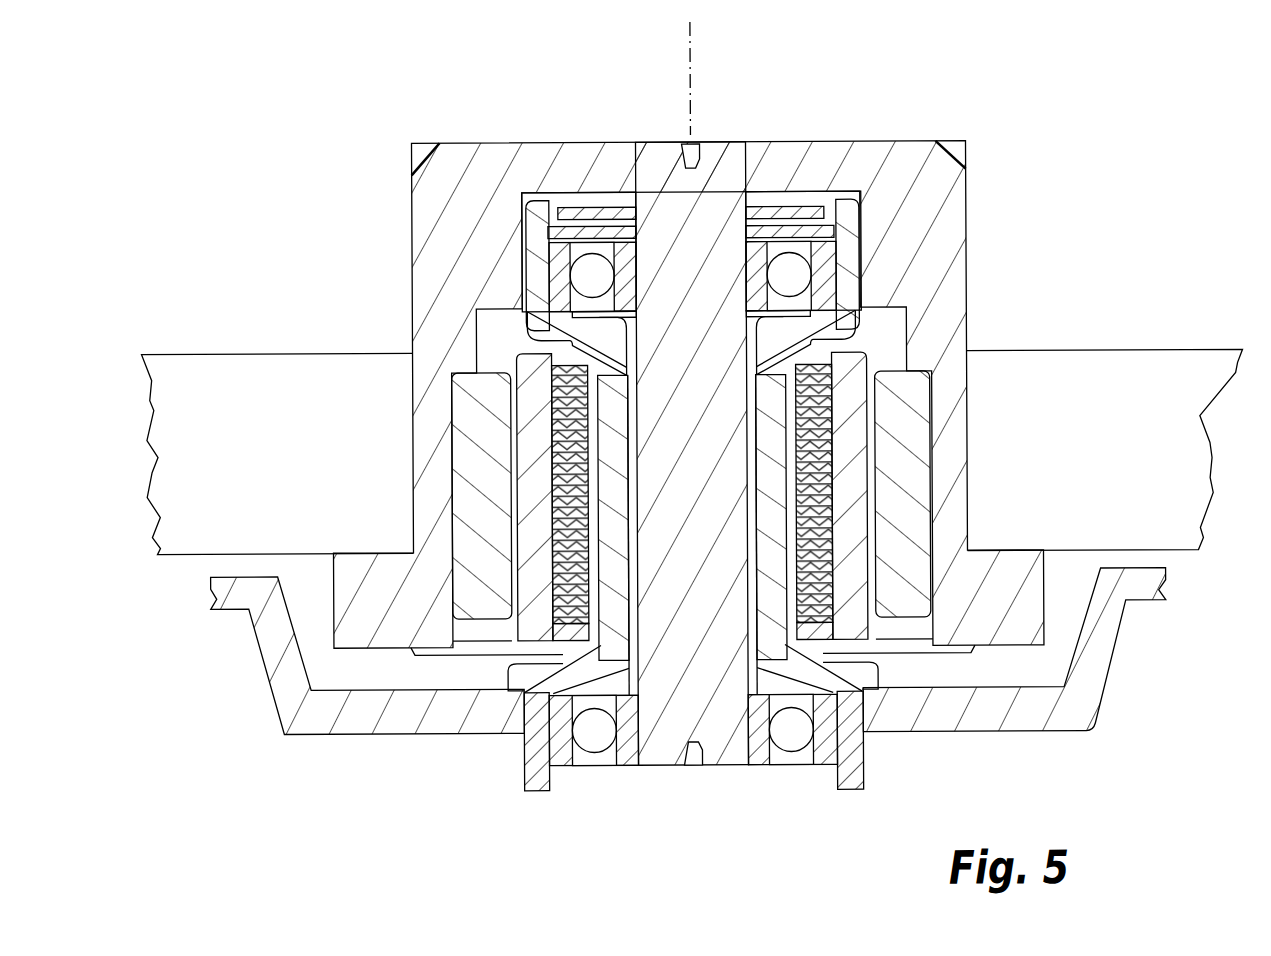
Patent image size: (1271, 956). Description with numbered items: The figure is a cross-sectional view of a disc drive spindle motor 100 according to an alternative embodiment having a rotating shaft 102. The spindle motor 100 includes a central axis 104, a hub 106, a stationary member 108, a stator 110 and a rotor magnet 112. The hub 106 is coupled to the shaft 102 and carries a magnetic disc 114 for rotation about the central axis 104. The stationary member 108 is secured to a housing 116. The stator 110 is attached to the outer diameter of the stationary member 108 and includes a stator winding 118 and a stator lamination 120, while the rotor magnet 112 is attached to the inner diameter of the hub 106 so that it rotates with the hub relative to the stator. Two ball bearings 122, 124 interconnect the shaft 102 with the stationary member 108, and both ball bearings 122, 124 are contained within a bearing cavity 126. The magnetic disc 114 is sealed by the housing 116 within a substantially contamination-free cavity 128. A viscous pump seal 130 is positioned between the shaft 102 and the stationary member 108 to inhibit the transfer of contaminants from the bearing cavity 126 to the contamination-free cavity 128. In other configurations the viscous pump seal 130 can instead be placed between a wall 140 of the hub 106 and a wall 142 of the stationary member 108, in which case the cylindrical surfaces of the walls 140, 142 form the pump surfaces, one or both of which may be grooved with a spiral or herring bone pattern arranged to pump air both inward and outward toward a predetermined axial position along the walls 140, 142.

The disc drive spindle motor 100 is at (291, 172).
The rotating shaft 102 is at (670, 210).
The central axis 104 is at (692, 86).
The hub 106 is at (968, 258).
The stationary member 108 is at (767, 617).
The stator 110 is at (885, 635).
The rotor magnet 112 is at (905, 425).
The magnetic disc 114 is at (275, 352).
The housing 116 is at (1018, 733).
The stator winding 118 is at (852, 480).
The stator lamination 120 is at (830, 548).
The ball bearing 122 is at (778, 270).
The ball bearing 124 is at (790, 730).
The bearing cavity 126 is at (742, 332).
The contamination-free cavity 128 is at (1213, 297).
The viscous pump seal 130 is at (805, 195).
The wall of hub 140 is at (862, 240).
The wall of stationary member 142 is at (903, 212).